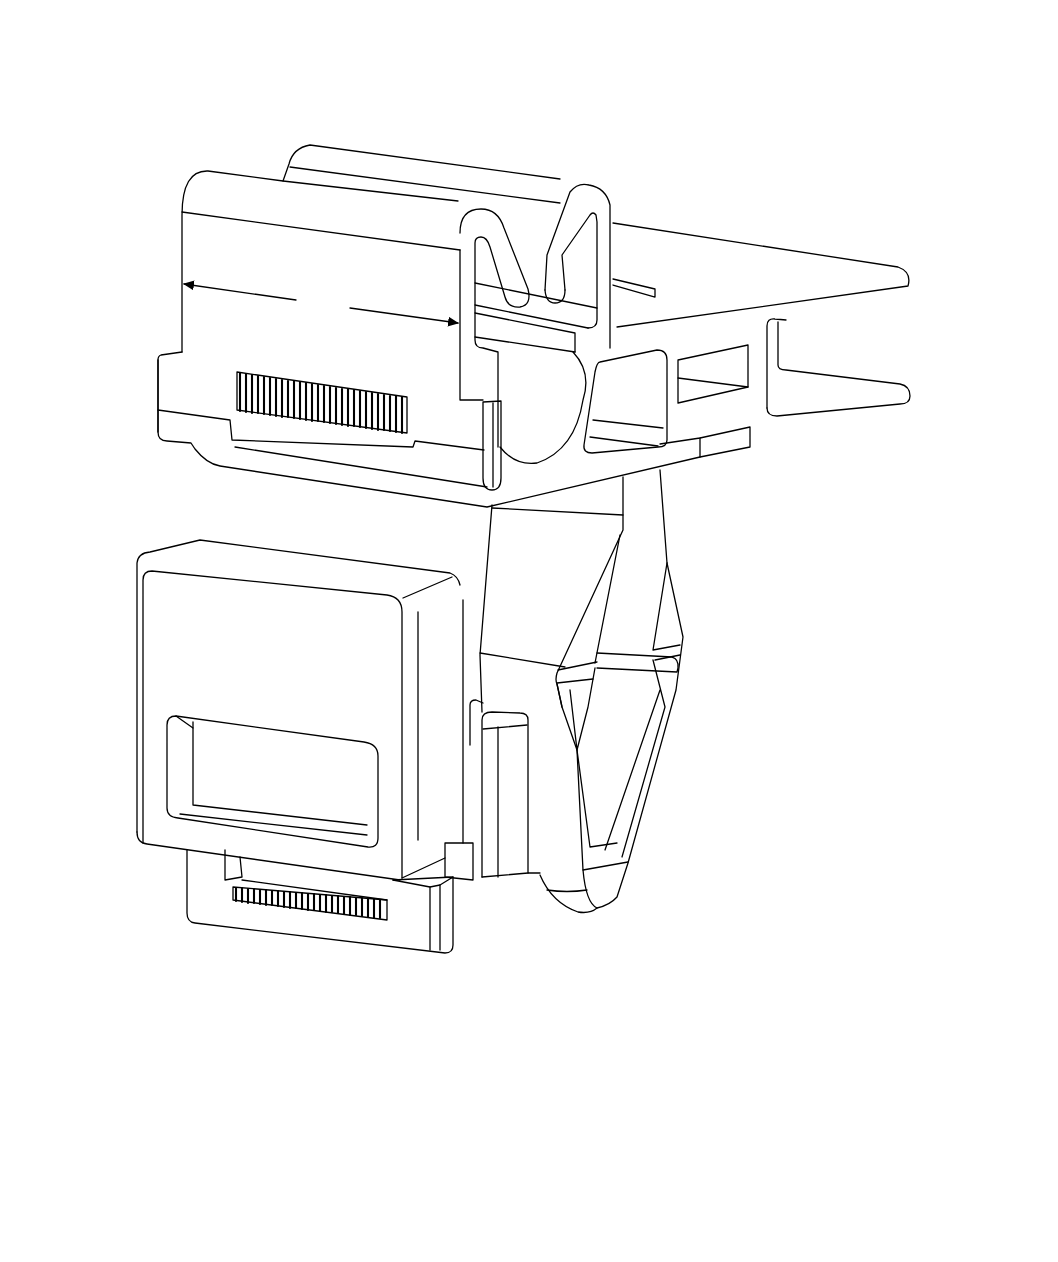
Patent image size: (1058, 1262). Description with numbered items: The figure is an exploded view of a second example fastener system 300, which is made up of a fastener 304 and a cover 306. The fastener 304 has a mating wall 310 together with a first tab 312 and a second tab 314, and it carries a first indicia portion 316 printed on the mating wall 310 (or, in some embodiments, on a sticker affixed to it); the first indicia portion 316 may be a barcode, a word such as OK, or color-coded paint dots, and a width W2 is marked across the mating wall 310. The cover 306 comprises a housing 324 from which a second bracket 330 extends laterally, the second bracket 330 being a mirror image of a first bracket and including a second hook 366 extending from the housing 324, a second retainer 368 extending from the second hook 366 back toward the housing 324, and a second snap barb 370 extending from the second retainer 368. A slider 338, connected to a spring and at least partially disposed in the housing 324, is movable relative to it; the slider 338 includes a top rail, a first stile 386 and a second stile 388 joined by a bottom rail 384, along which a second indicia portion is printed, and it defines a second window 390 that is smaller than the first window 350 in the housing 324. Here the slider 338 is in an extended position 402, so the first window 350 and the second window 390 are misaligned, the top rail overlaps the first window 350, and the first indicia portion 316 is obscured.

The second example fastener system 300 is at (764, 42).
The fastener 304 is at (742, 253).
The cover 306 is at (131, 712).
The mating wall 310 is at (403, 287).
The first tab 312 is at (166, 388).
The second tab 314 is at (473, 433).
The first indicia portion 316 is at (290, 418).
The housing 324 is at (152, 597).
The second bracket 330 is at (513, 843).
The slider 338 is at (200, 907).
The first window 350 is at (222, 758).
The second hook 366 is at (476, 868).
The second retainer 368 is at (477, 747).
The second snap barb 370 is at (483, 697).
The bottom rail 384 is at (370, 927).
The first stile 386 is at (306, 917).
The second stile 388 is at (197, 863).
The second window 390 is at (256, 875).
The extended position 402 is at (168, 522).
The width dimension W2 is at (321, 308).